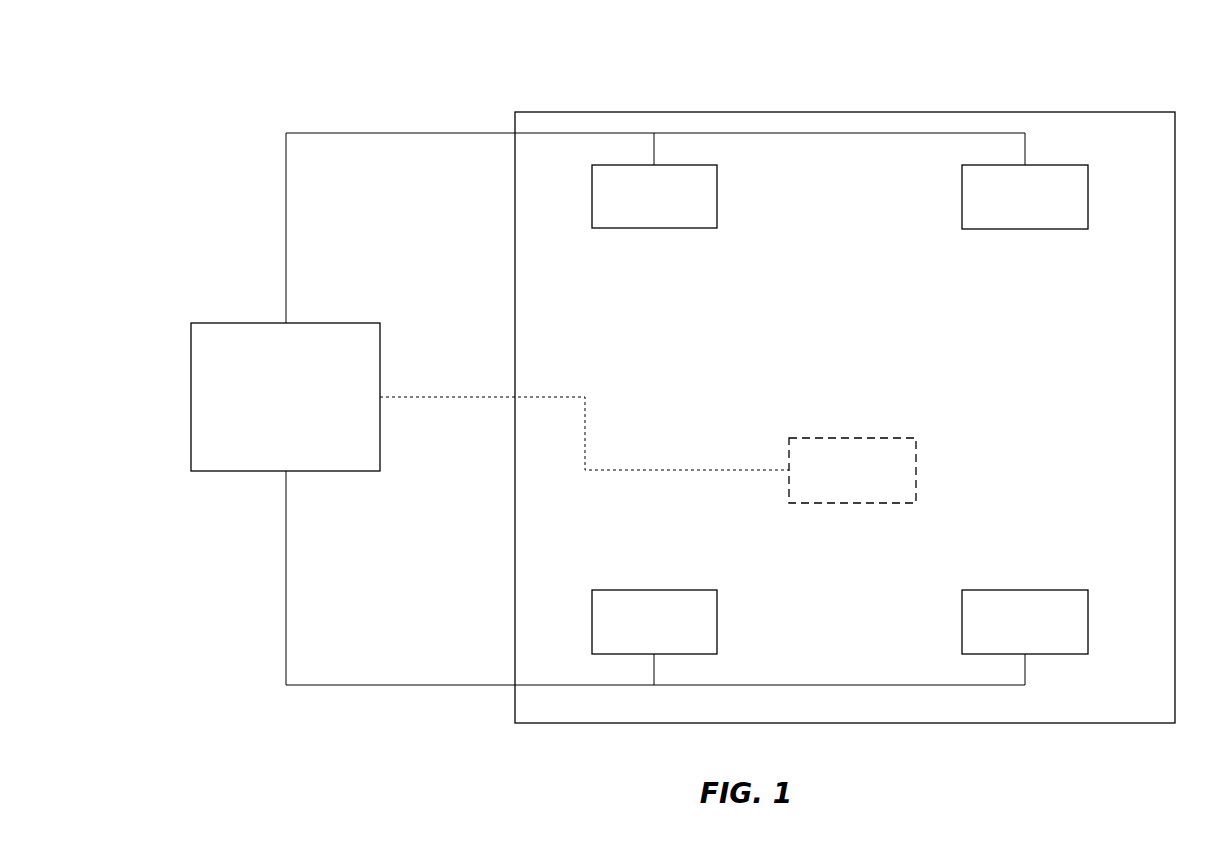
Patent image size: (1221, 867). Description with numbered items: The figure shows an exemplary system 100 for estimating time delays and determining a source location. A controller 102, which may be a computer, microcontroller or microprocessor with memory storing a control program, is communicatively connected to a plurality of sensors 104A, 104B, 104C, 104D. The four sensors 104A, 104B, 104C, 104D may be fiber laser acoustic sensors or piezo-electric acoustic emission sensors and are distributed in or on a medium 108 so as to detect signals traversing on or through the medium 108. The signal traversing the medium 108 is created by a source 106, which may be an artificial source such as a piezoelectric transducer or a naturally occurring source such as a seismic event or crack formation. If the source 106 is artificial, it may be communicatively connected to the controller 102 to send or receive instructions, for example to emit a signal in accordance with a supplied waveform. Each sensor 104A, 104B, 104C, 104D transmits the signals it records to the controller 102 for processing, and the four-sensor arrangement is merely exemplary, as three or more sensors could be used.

The system 100 is at (200, 77).
The controller 102 is at (285, 397).
The sensor 104A is at (654, 196).
The sensor 104B is at (1025, 197).
The sensor 104C is at (654, 622).
The sensor 104D is at (1025, 622).
The source 106 is at (852, 470).
The medium 108 is at (1084, 111).